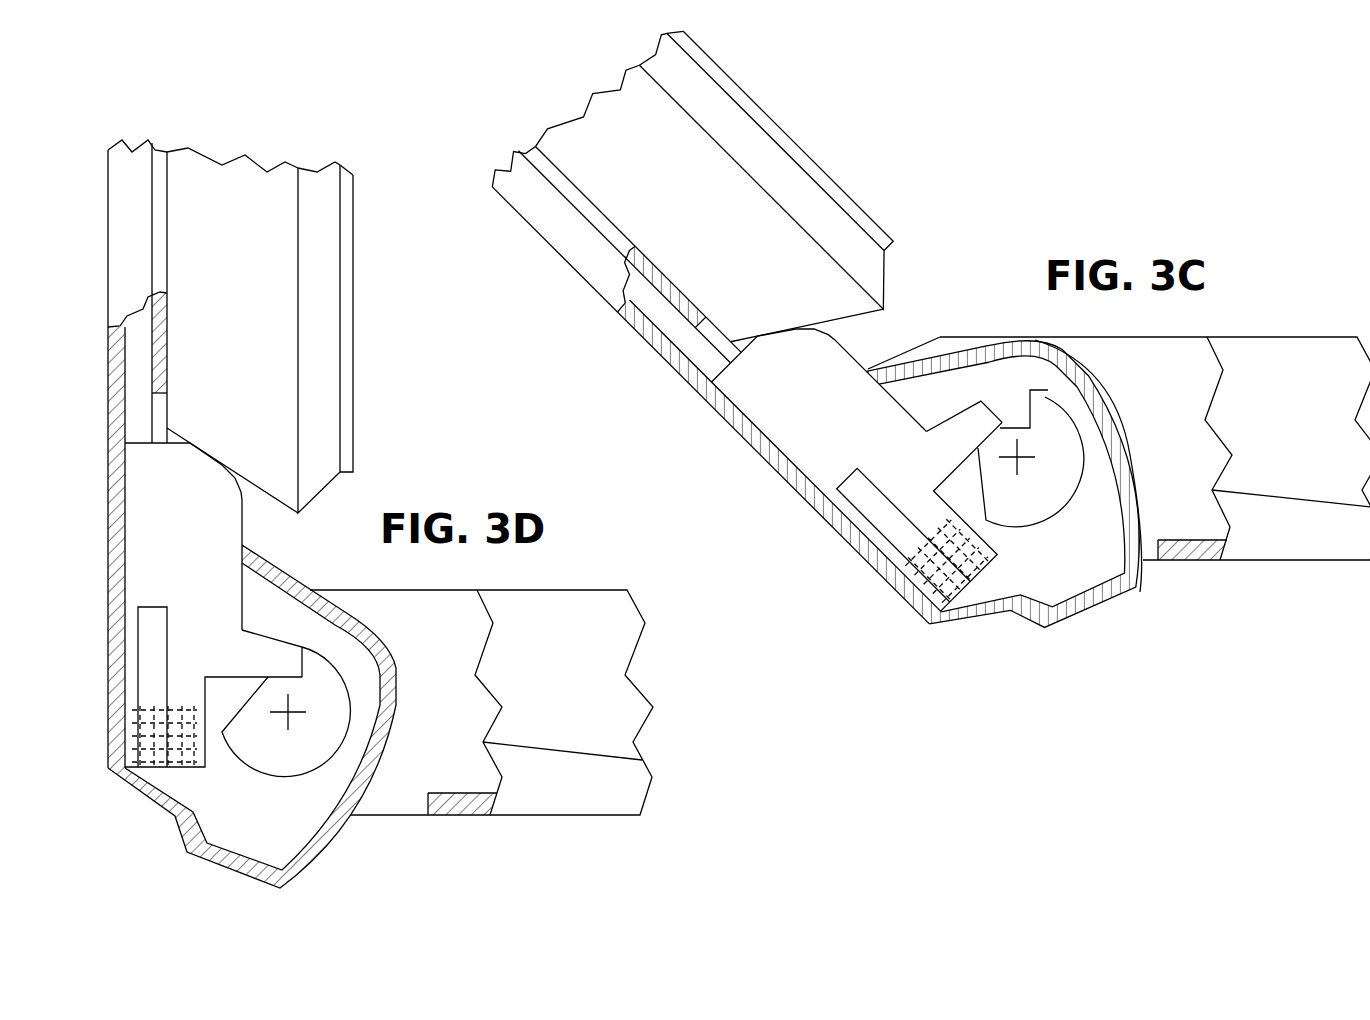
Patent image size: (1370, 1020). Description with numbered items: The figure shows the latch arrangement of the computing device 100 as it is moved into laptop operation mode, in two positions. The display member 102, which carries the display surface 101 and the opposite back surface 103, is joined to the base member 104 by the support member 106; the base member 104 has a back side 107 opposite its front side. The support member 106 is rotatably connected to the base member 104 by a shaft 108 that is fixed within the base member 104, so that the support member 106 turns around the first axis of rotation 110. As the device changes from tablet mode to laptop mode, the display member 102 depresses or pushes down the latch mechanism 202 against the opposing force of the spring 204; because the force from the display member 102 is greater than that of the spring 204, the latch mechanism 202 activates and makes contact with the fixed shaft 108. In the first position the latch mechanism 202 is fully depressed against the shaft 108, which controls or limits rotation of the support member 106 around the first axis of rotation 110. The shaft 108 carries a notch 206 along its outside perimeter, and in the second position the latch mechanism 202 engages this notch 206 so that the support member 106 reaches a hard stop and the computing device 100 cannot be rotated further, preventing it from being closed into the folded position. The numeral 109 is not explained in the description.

In FIG. 3D, the computing device 100 is at (457, 408).
In FIG. 3C, the computing device 100 is at (1036, 193).
In FIG. 3D, the display surface 101 is at (356, 335).
In FIG. 3C, the display surface 101 is at (787, 132).
In FIG. 3D, the display member 102 is at (237, 157).
In FIG. 3C, the display member 102 is at (893, 262).
In FIG. 3D, the back surface 103 is at (167, 155).
In FIG. 3C, the back surface 103 is at (629, 251).
In FIG. 3D, the base member 104 is at (597, 590).
In FIG. 3C, the base member 104 is at (1276, 337).
In FIG. 3D, the support member 106 is at (108, 176).
In FIG. 3C, the support member 106 is at (563, 262).
In FIG. 3C, the back side 107 is at (905, 352).
In FIG. 3D, the shaft 108 is at (283, 782).
In FIG. 3C, the shaft 108 is at (1027, 530).
In FIG. 3D, the hinge housing 109 is at (362, 704).
In FIG. 3C, the hinge housing 109 is at (1100, 434).
In FIG. 3D, the first axis of rotation 110 is at (281, 720).
In FIG. 3C, the first axis of rotation 110 is at (1015, 465).
In FIG. 3D, the latch mechanism 202 is at (243, 527).
In FIG. 3C, the latch mechanism 202 is at (812, 332).
In FIG. 3D, the spring 204 is at (187, 770).
In FIG. 3C, the spring 204 is at (990, 571).
In FIG. 3D, the notch 206 is at (300, 667).
In FIG. 3C, the notch 206 is at (1028, 400).